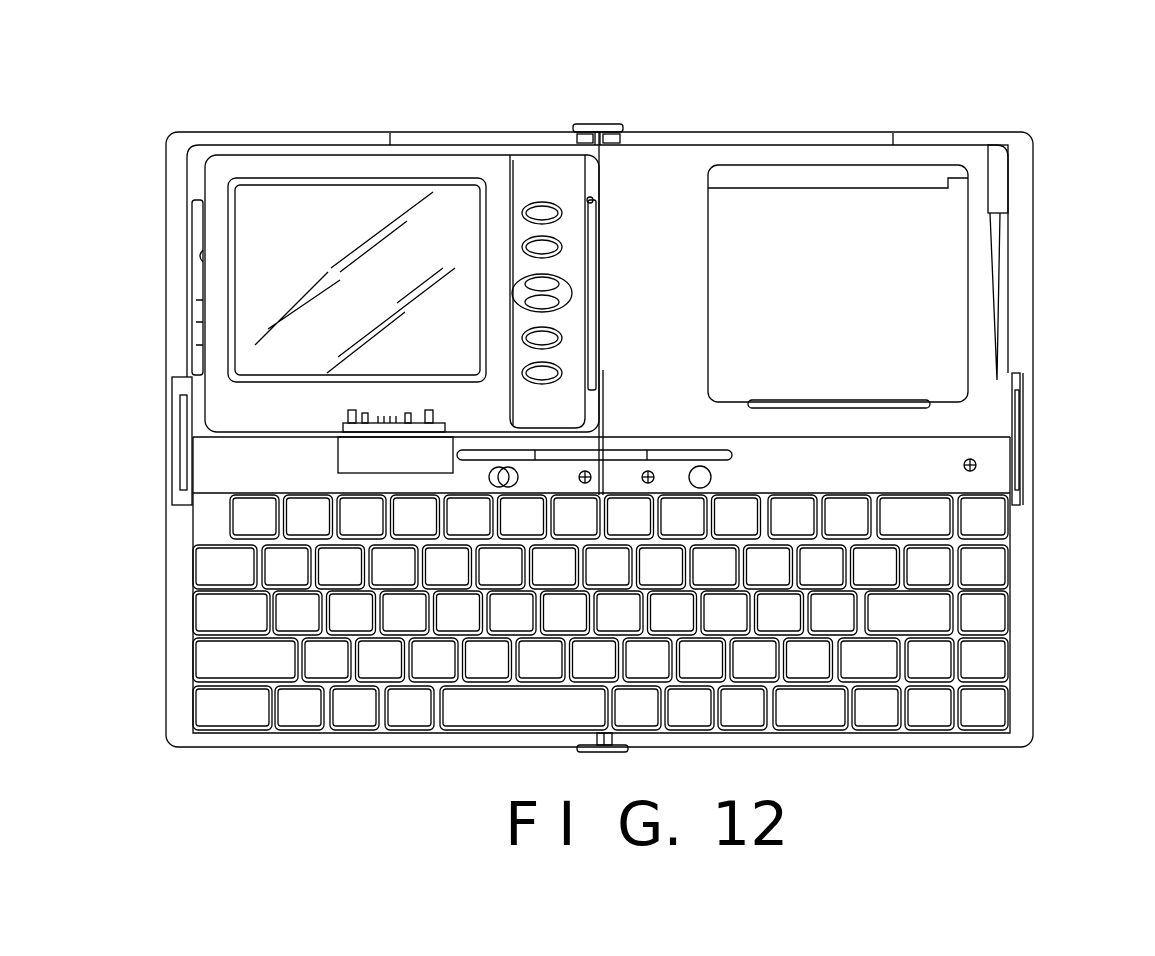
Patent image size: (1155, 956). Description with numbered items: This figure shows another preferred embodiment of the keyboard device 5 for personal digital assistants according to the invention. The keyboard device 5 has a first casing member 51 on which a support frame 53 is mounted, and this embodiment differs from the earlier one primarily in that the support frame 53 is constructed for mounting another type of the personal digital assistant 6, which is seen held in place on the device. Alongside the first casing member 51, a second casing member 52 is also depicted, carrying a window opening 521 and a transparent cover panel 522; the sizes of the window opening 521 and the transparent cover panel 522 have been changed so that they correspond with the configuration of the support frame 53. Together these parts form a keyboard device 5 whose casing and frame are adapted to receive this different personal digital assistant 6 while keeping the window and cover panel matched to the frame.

The keyboard device 5 is at (741, 117).
The first casing member 51 is at (460, 132).
The second housing 52 is at (787, 142).
The support frame 53 is at (592, 199).
The window opening 521 is at (967, 262).
The transparent cover panel 522 is at (937, 330).
The personal digital assistant 6 is at (343, 163).